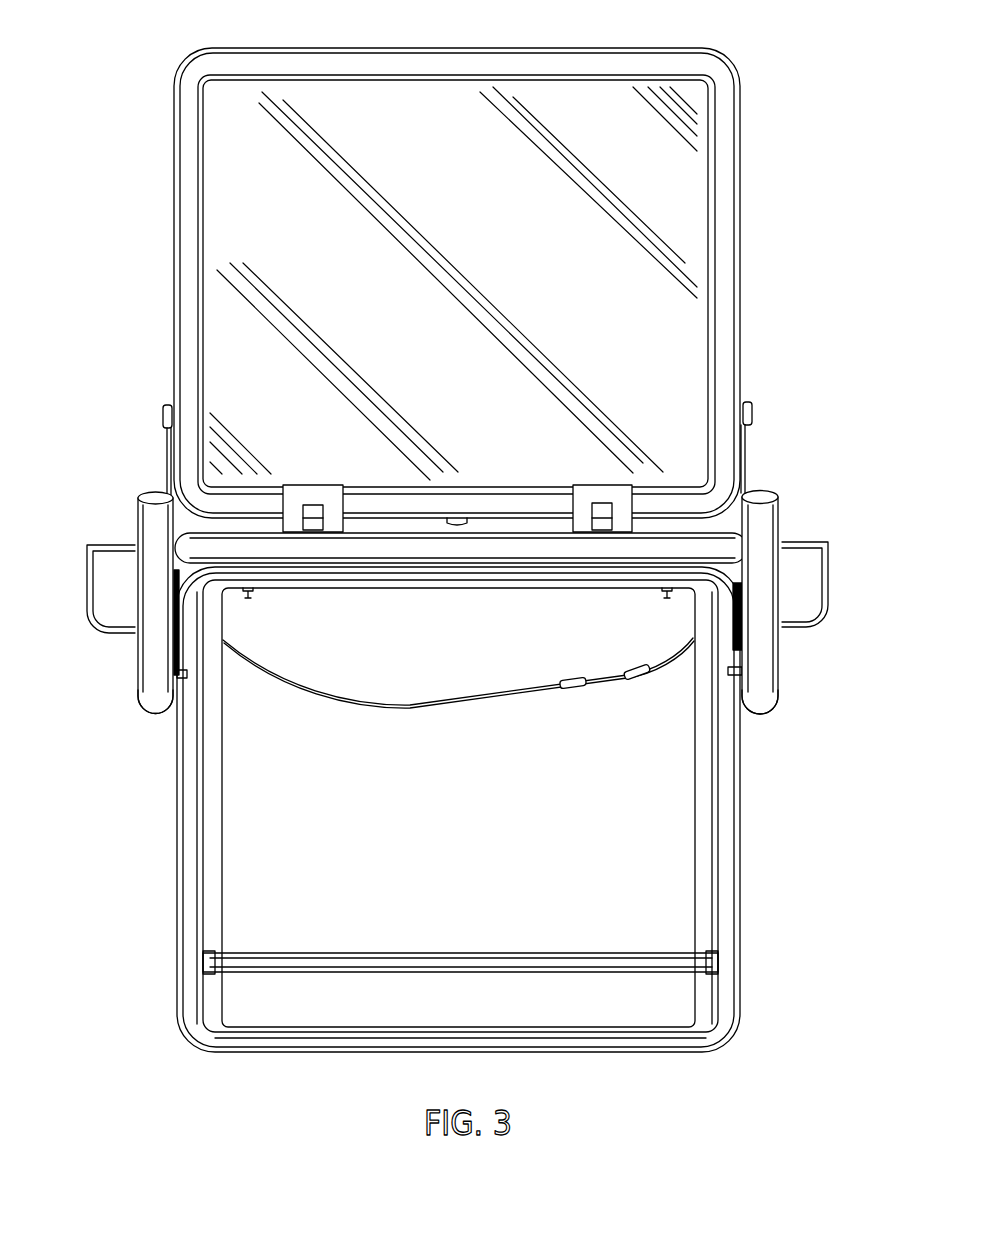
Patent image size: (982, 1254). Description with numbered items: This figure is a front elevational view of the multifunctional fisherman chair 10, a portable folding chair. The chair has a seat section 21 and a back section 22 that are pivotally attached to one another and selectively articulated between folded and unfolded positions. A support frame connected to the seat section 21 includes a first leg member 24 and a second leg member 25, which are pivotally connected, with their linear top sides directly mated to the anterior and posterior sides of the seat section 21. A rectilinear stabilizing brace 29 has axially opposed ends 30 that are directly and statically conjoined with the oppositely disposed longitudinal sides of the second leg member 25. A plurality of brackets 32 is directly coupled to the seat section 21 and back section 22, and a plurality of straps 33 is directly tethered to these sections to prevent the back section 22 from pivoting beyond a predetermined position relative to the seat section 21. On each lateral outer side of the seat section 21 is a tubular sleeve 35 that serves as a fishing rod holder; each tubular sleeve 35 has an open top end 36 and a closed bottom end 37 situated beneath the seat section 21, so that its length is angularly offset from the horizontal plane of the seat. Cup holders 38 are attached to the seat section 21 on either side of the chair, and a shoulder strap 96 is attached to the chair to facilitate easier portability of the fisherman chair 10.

The multifunctional fisherman chair 10 is at (136, 133).
The seat section 21 is at (397, 500).
The back section 22 is at (505, 283).
The first leg member 24 is at (400, 809).
The second leg member 25 is at (546, 807).
The rectilinear stabilizing brace 29 is at (460, 902).
The axially opposed ends 30 is at (208, 960).
The brackets 32 is at (311, 497).
The straps 33 is at (165, 462).
The tubular sleeves 35 is at (479, 558).
The open top end 36 is at (758, 497).
The closed bottom end 37 is at (158, 706).
The cup holders 38 is at (108, 545).
The shoulder strap 96 is at (508, 690).